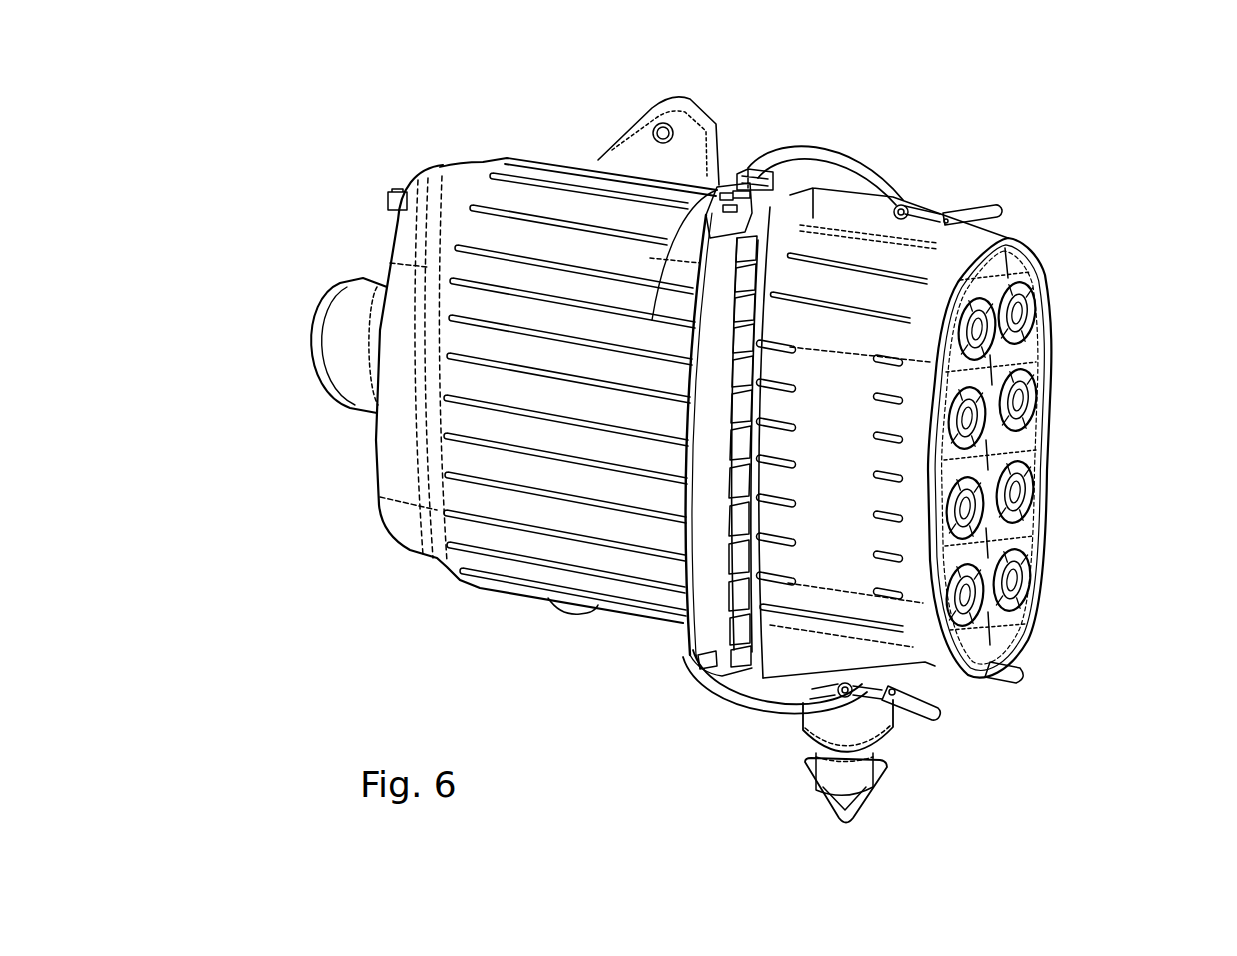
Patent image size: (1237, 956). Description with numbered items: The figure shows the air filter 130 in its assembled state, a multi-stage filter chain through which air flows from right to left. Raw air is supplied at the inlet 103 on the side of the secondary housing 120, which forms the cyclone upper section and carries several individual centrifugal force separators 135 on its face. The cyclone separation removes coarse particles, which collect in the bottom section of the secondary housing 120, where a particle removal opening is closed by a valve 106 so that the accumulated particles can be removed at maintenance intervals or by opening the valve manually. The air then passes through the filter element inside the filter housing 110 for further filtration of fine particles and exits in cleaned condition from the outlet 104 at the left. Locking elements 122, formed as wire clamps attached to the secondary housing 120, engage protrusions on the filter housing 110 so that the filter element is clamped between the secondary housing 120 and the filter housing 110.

The inlet 103 is at (1095, 268).
The outlet 104 is at (320, 325).
The valve 106 is at (858, 748).
The filter housing 110 is at (535, 205).
The secondary housing 120 is at (905, 268).
The locking elements 122 is at (845, 150).
The air filter 130 is at (290, 115).
The centrifugal force separators 135 is at (1020, 395).